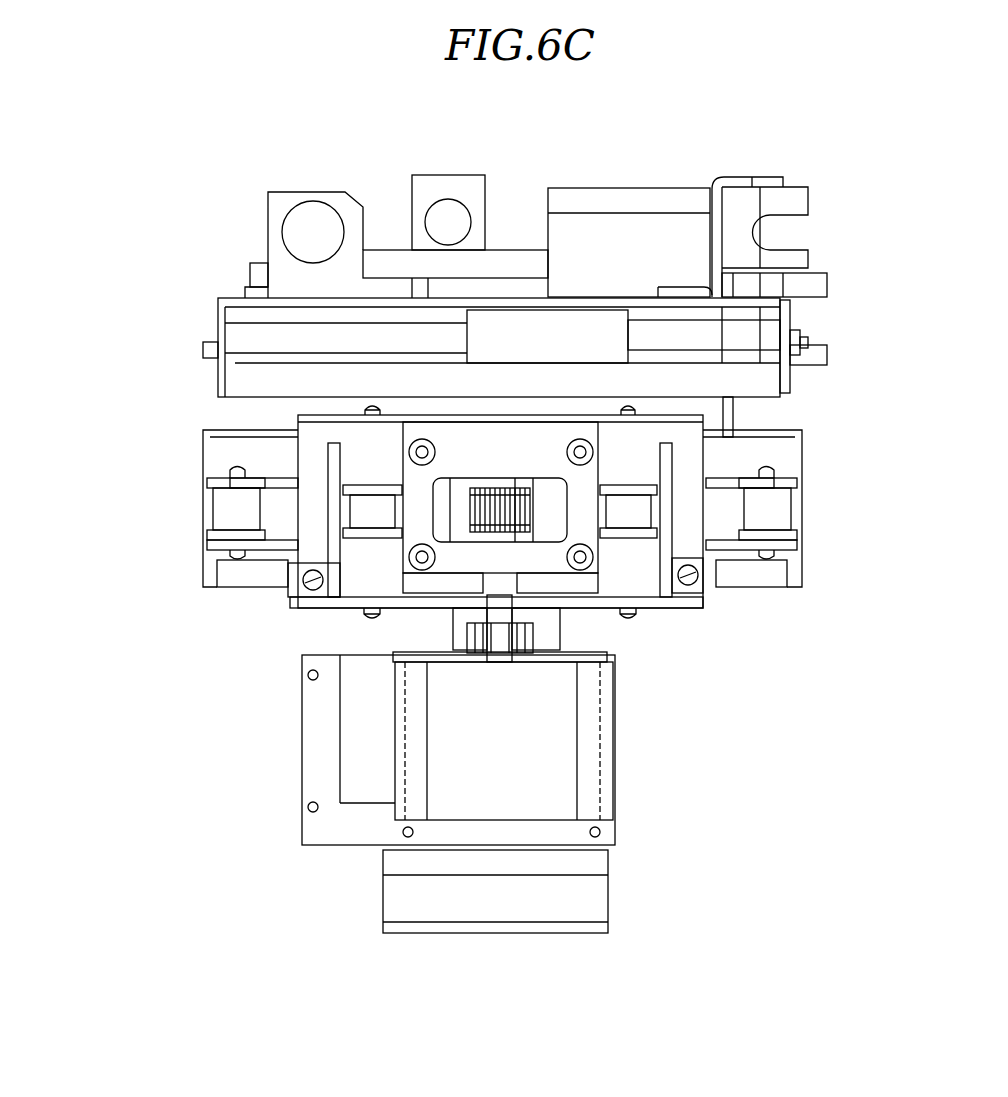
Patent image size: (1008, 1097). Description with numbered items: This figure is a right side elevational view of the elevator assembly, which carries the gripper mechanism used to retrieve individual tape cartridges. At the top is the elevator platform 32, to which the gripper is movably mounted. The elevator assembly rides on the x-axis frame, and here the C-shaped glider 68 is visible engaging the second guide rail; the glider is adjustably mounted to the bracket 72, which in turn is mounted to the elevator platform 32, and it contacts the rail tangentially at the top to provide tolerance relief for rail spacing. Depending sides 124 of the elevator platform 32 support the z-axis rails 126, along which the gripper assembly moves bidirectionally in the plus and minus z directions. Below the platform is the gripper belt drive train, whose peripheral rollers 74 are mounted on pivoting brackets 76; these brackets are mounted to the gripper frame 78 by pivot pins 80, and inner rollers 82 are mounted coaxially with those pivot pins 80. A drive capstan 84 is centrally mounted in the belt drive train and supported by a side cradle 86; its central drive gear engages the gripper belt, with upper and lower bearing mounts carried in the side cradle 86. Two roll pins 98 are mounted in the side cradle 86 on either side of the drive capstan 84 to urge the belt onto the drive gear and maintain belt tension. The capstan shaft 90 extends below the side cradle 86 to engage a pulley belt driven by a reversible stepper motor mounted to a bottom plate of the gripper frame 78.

The elevator platform 32 is at (235, 297).
The C-shaped glider 68 is at (810, 202).
The bracket 72 is at (772, 177).
The peripheral rollers 74 is at (227, 507).
The pivoting brackets 76 is at (280, 480).
The gripper frame 78 is at (377, 463).
The pivot pins 80 is at (370, 620).
The inner rollers 82 is at (373, 516).
The drive capstan 84 is at (543, 508).
The side cradle 86 is at (410, 657).
The capstan shaft 90 is at (500, 638).
The roll pins 98 is at (457, 515).
The depending sides 124 is at (212, 378).
The z-axis rails 126 is at (230, 407).